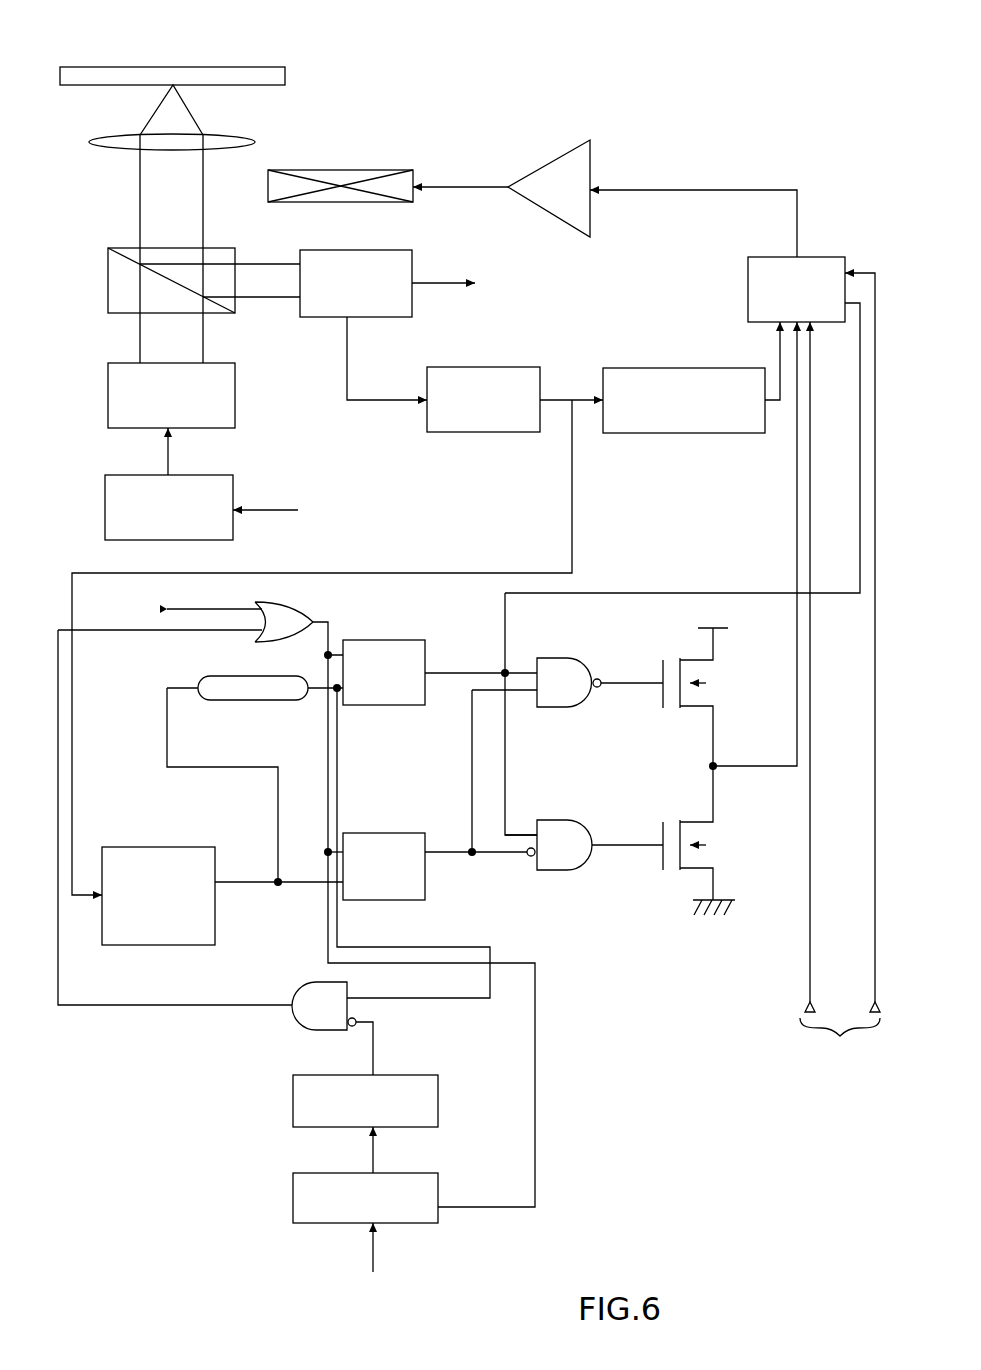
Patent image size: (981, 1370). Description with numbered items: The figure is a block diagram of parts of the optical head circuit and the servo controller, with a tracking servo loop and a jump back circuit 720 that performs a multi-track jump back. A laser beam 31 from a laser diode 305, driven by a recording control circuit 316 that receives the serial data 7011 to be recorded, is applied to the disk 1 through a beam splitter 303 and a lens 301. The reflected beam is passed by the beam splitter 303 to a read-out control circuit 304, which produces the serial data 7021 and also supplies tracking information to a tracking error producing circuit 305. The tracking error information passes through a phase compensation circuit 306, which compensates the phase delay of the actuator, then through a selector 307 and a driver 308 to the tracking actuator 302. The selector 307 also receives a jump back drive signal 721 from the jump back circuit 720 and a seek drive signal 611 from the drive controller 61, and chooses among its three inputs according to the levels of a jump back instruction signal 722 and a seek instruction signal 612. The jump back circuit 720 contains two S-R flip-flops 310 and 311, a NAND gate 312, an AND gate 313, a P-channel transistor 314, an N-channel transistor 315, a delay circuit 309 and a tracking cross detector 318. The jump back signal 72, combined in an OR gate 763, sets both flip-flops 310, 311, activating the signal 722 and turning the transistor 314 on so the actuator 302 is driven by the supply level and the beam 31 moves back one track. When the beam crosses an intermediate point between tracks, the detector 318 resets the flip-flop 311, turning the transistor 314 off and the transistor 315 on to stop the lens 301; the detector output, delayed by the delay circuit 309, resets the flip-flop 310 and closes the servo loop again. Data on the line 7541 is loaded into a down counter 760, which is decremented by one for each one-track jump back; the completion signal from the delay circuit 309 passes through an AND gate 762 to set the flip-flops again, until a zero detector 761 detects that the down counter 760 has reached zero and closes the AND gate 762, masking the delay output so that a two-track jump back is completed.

The disk 1 is at (188, 67).
The laser beam 31 is at (190, 112).
The lens 301 is at (130, 135).
The tracking actuator 302 is at (302, 170).
The beam splitter 303 is at (108, 253).
The read-out control circuit 304 is at (405, 252).
The laser diode / tracking error producing circuit 305 is at (108, 400).
The phase compensation circuit 306 is at (657, 368).
The selector 307 is at (748, 292).
The driver 308 is at (585, 142).
The delay circuit 309 is at (250, 700).
The S-R type flip-flop 310 is at (378, 640).
The S-R type flip-flop 311 is at (378, 900).
The NAND gate 312 is at (546, 708).
The AND gate 313 is at (548, 870).
The P-channel transistor 314 is at (718, 690).
The N-channel transistor 315 is at (718, 852).
The recording control circuit 316 is at (105, 490).
The tracking cross detector 318 is at (216, 915).
The drive controller 61 is at (840, 1040).
The seek drive signal 611 is at (808, 990).
The seek instruction signal 612 is at (875, 990).
The jump back signal 72 is at (244, 608).
The jump back circuit 720 is at (476, 878).
The jump back drive signal 721 is at (745, 768).
The jump back instruction signal 722 is at (690, 585).
The down counter 760 is at (403, 1173).
The zero detector 761 is at (403, 1075).
The AND gate 762 is at (298, 990).
The OR gate 763 is at (305, 610).
The serial data to be recorded 7011 is at (265, 512).
The serial data 7021 is at (432, 287).
The data line 7541 is at (374, 1258).